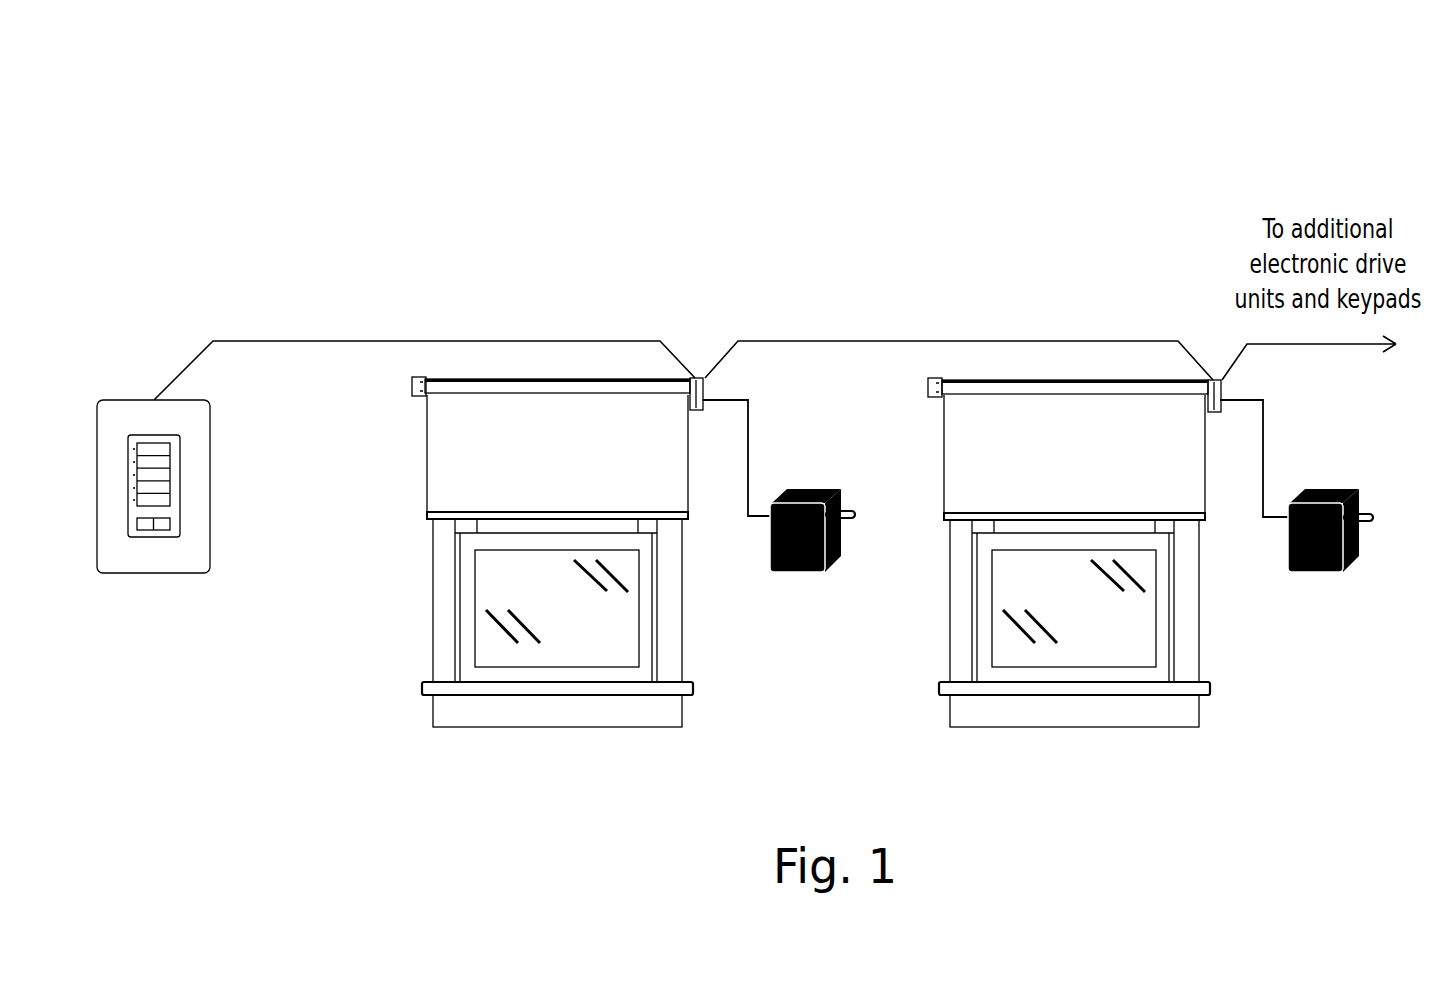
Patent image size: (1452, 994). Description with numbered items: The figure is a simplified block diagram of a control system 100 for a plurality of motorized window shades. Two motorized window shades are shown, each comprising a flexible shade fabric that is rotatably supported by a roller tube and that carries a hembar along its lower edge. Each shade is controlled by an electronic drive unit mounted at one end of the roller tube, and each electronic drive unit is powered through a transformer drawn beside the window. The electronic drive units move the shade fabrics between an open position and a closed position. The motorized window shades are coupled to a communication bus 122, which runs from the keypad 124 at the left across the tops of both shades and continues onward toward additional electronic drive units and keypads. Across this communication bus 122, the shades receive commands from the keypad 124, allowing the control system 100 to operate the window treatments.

The control system 100 is at (677, 120).
The communication bus 122 is at (375, 341).
The keypad 124 is at (118, 400).